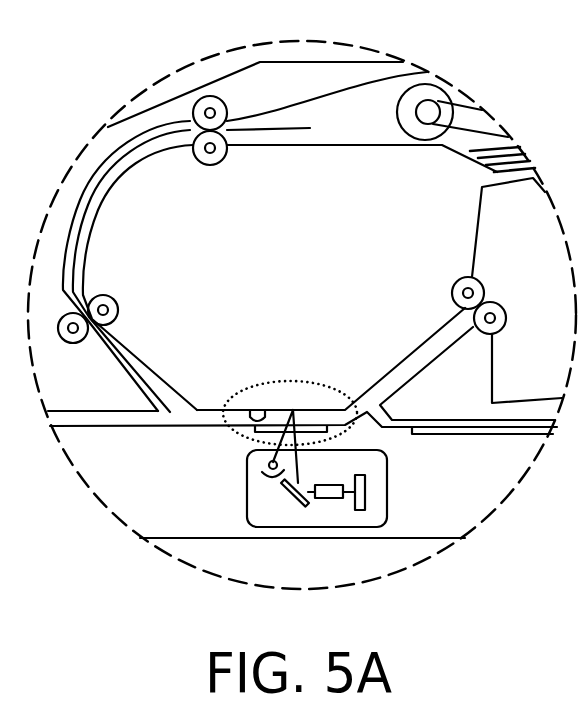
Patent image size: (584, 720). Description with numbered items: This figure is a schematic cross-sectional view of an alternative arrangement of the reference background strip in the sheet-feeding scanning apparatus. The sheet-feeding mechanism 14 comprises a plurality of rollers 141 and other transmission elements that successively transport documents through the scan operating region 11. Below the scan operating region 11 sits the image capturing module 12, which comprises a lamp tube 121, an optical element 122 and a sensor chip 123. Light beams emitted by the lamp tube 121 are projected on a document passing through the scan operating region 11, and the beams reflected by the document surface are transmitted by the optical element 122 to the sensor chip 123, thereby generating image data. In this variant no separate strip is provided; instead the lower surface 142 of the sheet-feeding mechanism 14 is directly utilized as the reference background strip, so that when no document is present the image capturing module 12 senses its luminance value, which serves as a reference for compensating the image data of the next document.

The scan operating region 11 is at (318, 383).
The image capturing module 12 is at (325, 486).
The lamp tube 121 is at (252, 478).
The optical element 122 is at (287, 490).
The sensor chip 123 is at (367, 483).
The sheet-feeding mechanism 14 is at (307, 273).
The rollers 141 is at (212, 165).
The lower surface 142 is at (255, 415).